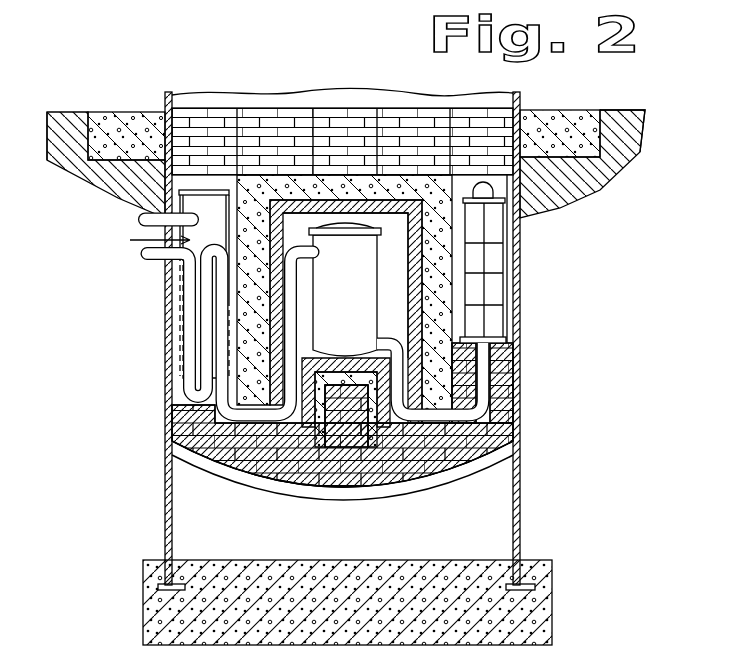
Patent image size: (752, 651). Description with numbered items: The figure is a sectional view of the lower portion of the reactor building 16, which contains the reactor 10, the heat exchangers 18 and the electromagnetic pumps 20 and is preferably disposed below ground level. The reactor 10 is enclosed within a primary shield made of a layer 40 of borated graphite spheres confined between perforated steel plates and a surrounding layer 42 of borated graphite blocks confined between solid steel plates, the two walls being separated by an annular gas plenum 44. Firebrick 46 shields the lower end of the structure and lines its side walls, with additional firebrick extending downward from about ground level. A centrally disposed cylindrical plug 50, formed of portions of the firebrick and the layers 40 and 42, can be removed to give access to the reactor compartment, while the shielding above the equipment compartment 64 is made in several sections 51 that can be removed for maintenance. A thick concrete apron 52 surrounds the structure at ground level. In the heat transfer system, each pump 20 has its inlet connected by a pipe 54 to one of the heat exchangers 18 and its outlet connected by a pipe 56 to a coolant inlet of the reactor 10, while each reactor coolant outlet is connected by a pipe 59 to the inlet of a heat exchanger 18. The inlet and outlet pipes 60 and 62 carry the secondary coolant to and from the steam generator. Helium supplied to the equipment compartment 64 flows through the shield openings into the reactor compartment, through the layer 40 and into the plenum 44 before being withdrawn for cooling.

The reactor 10 is at (357, 290).
The reactor building 16 is at (159, 92).
The heat exchangers 18 is at (142, 248).
The electromagnetic pumps 20 is at (506, 259).
The layer of borated graphite spheres 40 is at (413, 246).
The layer of borated graphite blocks 42 is at (430, 279).
The annular gas plenum 44 is at (410, 313).
The firebrick 46 is at (358, 488).
The cylindrical plug 50 is at (332, 106).
The sections 51 is at (208, 108).
The concrete apron 52 is at (112, 114).
The pipe 54 is at (492, 192).
The pipe 56 is at (500, 405).
The pipe 59 is at (218, 312).
The inlet pipe 60 is at (148, 220).
The outlet pipe 62 is at (150, 264).
The equipment compartment 64 is at (508, 312).